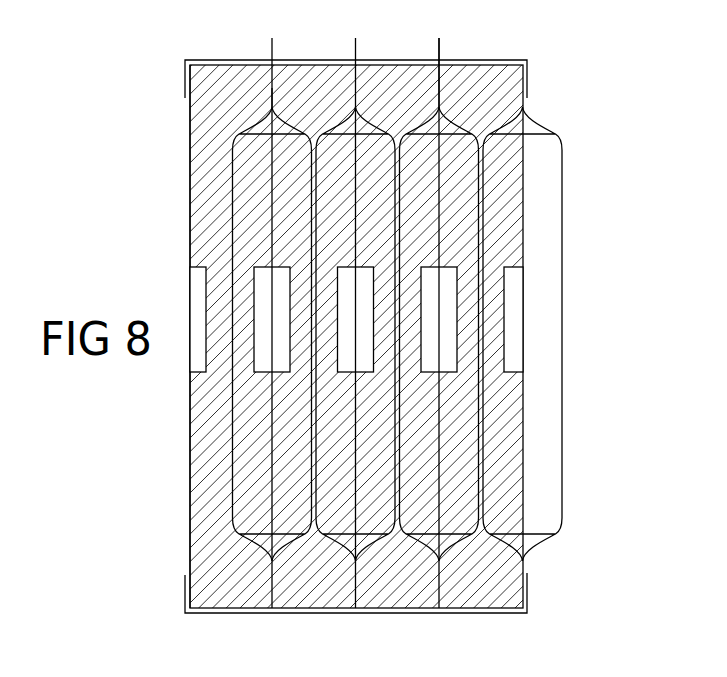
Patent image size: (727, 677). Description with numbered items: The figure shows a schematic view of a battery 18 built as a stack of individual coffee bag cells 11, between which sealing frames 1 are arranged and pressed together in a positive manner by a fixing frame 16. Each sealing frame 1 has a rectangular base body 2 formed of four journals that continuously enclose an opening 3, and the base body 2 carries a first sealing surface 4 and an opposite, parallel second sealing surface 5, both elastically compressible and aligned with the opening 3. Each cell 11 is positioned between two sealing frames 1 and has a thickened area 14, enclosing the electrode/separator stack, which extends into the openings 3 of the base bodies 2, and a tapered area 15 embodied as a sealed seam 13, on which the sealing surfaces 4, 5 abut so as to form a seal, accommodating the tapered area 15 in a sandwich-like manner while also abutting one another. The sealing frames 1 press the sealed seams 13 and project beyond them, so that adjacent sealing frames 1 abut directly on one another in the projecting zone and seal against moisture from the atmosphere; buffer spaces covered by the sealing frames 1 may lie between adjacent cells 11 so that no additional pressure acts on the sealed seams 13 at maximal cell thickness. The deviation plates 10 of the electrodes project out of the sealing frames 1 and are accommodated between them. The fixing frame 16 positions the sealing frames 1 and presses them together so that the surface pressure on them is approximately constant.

The sealing frame 1 is at (323, 75).
The base body 2 is at (197, 548).
The opening 3 is at (188, 475).
The first sealing surface 4 is at (272, 83).
The second sealing surface 5 is at (272, 87).
The deviation plate 10 is at (439, 48).
The cell 11 is at (562, 195).
The sealed seam 13 is at (270, 583).
The thickened area 14 is at (546, 268).
The tapered area 15 is at (270, 95).
The fixing frame 16 is at (502, 60).
The battery 18 is at (417, 314).